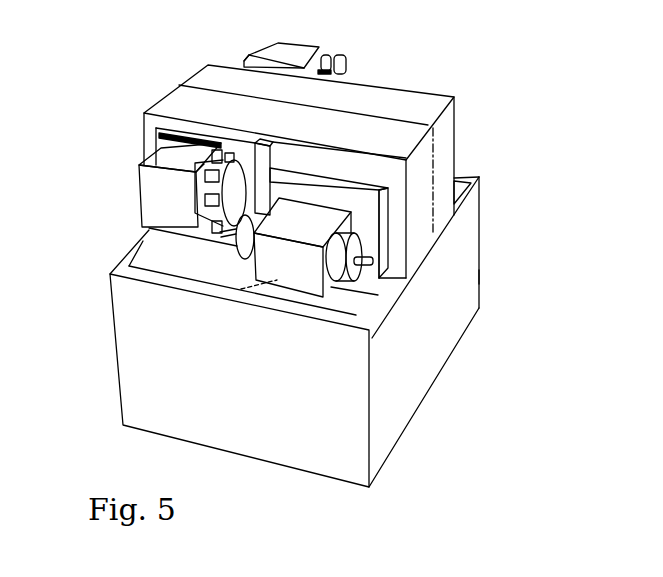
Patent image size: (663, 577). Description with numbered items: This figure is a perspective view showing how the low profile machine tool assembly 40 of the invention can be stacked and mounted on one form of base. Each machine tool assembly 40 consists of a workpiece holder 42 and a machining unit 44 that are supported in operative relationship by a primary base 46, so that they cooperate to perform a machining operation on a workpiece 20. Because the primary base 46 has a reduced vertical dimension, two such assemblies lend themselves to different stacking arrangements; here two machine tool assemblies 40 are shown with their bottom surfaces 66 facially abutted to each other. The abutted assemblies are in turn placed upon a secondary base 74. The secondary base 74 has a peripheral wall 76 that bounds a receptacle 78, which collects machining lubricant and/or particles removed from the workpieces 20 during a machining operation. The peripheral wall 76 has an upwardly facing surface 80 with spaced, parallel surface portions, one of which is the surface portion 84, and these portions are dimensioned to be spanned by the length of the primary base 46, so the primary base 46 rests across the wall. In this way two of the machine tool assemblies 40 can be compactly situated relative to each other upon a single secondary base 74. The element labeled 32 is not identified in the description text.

The workpiece 20 is at (354, 266).
The base 32 is at (124, 268).
The machine tool assembly 40 is at (438, 93).
The workpiece holder 42 is at (292, 300).
The machining unit 44 is at (140, 207).
The primary base 46 is at (207, 68).
The bottom surface 66 is at (360, 110).
The secondary base 74 is at (430, 337).
The peripheral wall 76 is at (462, 232).
The receptacle 78 is at (198, 263).
The upwardly facing surface 80 is at (466, 173).
The surface portion 84 is at (476, 277).